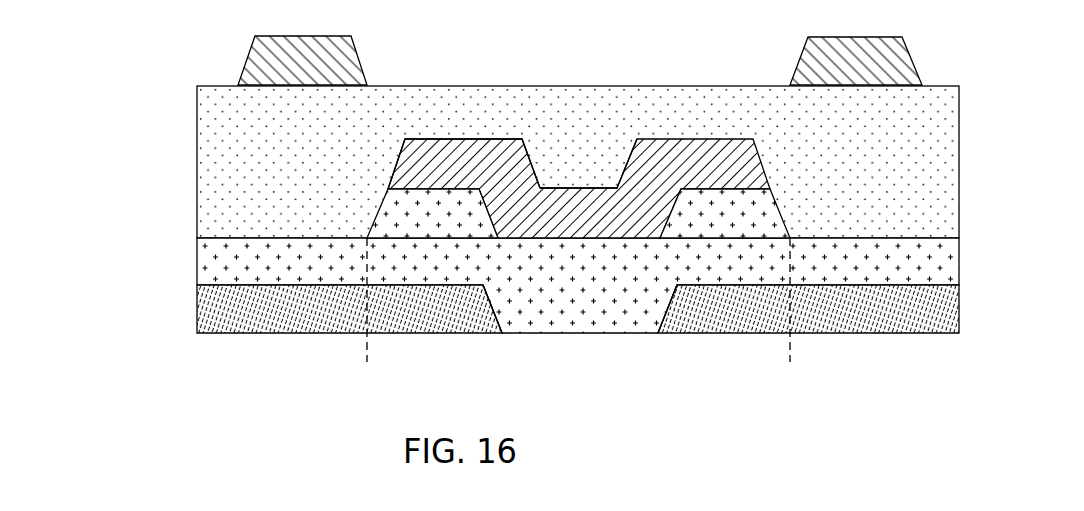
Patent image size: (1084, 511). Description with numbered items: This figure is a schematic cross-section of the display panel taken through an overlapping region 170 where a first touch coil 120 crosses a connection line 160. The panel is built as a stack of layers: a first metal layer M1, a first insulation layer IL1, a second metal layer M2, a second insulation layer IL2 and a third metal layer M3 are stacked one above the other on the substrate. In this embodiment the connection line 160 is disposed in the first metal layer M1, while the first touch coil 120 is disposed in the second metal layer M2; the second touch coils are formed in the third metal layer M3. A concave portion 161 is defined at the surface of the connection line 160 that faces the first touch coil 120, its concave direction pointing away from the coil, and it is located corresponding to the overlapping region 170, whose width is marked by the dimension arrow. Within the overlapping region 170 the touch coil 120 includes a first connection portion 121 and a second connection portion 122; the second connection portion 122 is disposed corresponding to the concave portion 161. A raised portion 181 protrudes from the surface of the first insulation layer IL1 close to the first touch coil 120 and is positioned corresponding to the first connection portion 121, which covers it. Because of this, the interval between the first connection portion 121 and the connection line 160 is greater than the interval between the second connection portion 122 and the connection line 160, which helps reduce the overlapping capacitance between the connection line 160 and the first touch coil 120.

The third metal layer M3 is at (250, 62).
The second insulation layer IL2 is at (205, 143).
The second metal layer M2 is at (417, 203).
The first touch coil 120 is at (397, 168).
The first insulation layer IL1 is at (205, 257).
The first metal layer M1 is at (502, 309).
The connection line 160 is at (200, 307).
The first connection portion 121 is at (423, 152).
The raised portion 181 is at (470, 198).
The concave portion 161 is at (565, 292).
The second connection portion 122 is at (600, 202).
The overlapping region 170 is at (779, 354).